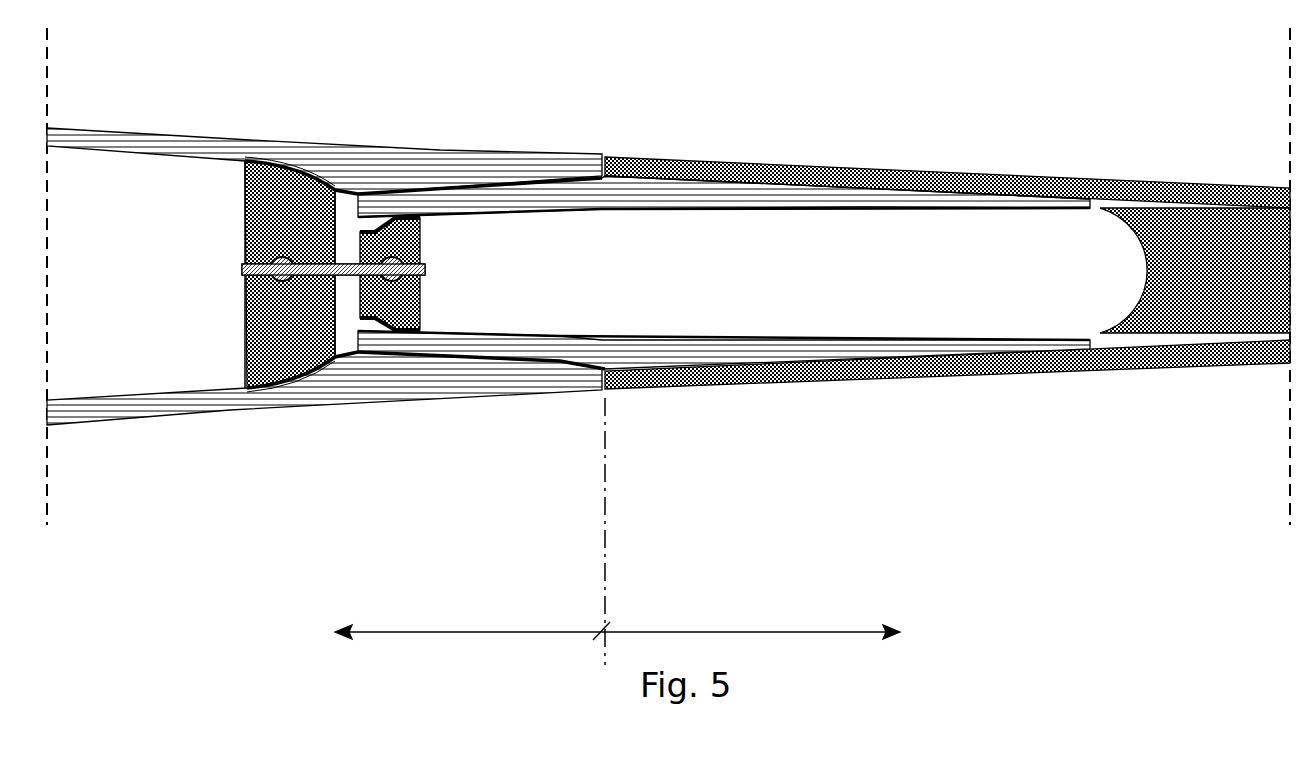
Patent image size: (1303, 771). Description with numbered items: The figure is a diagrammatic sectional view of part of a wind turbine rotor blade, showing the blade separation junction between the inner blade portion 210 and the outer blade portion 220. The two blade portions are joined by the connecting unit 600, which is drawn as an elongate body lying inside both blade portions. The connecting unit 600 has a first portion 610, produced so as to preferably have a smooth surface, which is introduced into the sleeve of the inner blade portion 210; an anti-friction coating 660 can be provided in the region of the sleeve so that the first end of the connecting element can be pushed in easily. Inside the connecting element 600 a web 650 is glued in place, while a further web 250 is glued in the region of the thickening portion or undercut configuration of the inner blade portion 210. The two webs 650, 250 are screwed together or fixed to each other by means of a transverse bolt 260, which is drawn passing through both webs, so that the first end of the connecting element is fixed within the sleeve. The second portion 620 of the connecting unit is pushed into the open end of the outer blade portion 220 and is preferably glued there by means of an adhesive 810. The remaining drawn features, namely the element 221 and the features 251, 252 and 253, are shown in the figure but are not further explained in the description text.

The inner blade portion 210 is at (77, 138).
The outer blade portion 220 is at (985, 172).
The end plug of second tubular section 221 is at (1237, 273).
The web 250 is at (263, 222).
The end face of connector block 251 is at (245, 180).
The lower layer of connector block 252 is at (337, 320).
The upper layer of connector block 253 is at (268, 162).
The transverse bolt 260 is at (245, 272).
The connecting unit 600 is at (628, 197).
The first portion 610 is at (530, 185).
The second portion 620 is at (920, 208).
The web 650 is at (420, 305).
The anti-friction coating 660 is at (467, 368).
The adhesive 810 is at (703, 162).